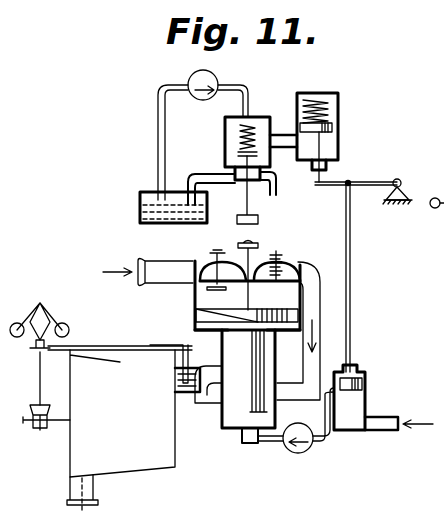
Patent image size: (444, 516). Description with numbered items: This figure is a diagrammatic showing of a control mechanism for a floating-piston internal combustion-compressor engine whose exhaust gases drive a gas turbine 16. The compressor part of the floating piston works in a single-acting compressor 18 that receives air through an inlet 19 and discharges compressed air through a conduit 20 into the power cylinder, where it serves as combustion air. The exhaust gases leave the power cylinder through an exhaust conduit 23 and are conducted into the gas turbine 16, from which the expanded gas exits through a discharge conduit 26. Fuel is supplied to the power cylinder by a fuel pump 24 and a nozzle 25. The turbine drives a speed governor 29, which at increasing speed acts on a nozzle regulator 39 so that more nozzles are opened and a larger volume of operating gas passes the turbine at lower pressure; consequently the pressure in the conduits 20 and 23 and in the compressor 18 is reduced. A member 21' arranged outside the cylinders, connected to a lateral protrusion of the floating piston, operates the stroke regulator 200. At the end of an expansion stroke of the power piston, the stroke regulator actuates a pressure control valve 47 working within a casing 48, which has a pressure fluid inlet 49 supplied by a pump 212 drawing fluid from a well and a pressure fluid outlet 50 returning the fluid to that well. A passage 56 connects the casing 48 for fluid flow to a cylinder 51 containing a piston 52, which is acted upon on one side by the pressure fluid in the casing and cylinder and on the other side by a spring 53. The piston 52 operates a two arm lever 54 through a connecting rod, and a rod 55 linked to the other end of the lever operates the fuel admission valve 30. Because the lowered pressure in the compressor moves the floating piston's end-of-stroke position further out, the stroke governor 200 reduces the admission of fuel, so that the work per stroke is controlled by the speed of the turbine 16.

The gas turbine 16 is at (120, 411).
The compressor cylinder 18 is at (205, 295).
The inlet 19 is at (148, 268).
The conduit 20 is at (305, 264).
The member 21' is at (265, 268).
The exhaust conduit 23 is at (208, 400).
The fuel pump 24 is at (297, 454).
The nozzle 25 is at (245, 443).
The discharge conduit 26 is at (96, 492).
The speed governor 29 is at (40, 302).
The fuel admission valve 30 is at (362, 386).
The nozzle regulator 39 is at (195, 372).
The pressure control valve 47 is at (273, 178).
The casing 48 is at (224, 132).
The pressure fluid inlet 49 is at (236, 88).
The pressure fluid outlet 50 is at (200, 178).
The cylinder 51 is at (338, 108).
The piston 52 is at (335, 129).
The spring 53 is at (318, 92).
The two arm lever 54 is at (394, 180).
The rod 55 is at (346, 208).
The passage 56 is at (282, 134).
The stroke regulator 200 is at (288, 117).
The pump 212 is at (191, 78).